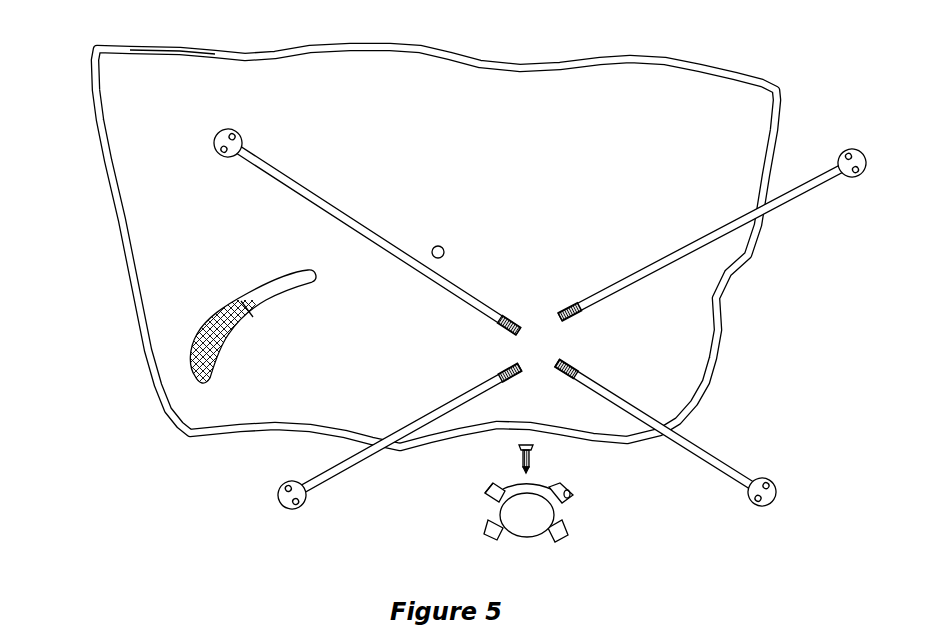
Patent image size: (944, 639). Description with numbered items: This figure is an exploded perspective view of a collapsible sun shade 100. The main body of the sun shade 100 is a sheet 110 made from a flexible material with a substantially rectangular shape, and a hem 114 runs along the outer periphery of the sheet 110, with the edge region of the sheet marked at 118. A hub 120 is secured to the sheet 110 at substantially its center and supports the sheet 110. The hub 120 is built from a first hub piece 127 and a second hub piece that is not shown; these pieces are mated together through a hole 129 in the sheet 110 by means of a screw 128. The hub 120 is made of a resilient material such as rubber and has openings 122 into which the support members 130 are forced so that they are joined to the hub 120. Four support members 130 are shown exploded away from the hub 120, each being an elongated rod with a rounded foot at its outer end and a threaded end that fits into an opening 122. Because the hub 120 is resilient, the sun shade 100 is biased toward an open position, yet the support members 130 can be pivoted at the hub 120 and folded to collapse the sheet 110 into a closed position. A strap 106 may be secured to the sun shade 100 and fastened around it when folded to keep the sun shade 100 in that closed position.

The sun shade 100 is at (97, 182).
The strap 106 is at (260, 307).
The sheet 110 is at (186, 212).
The hem 114 is at (355, 46).
The sheet edge 118 is at (153, 50).
The hub 120 is at (527, 523).
The openings 122 is at (573, 500).
The first hub piece 127 is at (497, 513).
The screw 128 is at (521, 449).
The hole 129 is at (443, 247).
The support members 130 is at (778, 208).